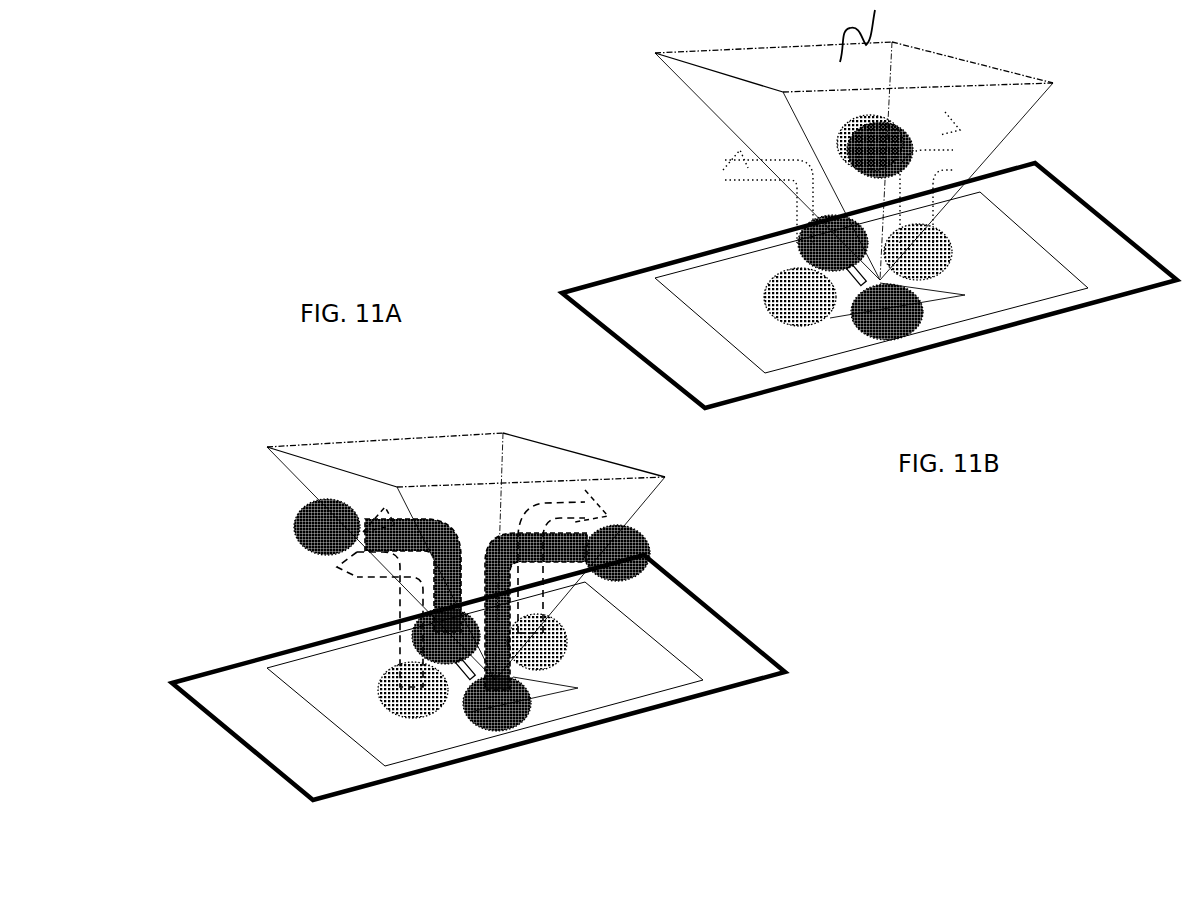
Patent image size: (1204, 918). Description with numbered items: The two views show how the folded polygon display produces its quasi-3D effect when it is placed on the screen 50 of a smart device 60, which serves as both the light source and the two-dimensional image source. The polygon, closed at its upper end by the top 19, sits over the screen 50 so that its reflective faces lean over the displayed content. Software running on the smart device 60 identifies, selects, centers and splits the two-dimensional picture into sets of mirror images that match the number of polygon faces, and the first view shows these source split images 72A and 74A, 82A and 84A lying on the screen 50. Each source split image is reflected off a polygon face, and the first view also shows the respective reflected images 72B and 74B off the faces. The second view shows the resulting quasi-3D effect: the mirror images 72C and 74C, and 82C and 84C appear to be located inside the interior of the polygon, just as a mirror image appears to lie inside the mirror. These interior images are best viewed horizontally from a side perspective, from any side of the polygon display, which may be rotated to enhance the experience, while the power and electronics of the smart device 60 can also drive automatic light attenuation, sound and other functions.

In FIG. 11A, the top 19 is at (455, 450).
In FIG. 11A, the screen 50 is at (485, 674).
In FIG. 11B, the screen 50 is at (871, 282).
In FIG. 11A, the smart device 60 is at (478, 677).
In FIG. 11B, the smart device 60 is at (869, 285).
In FIG. 11A, the source split image 72A is at (512, 725).
In FIG. 11B, the source split image 72A is at (898, 326).
In FIG. 11A, the reflected image 72B is at (653, 557).
In FIG. 11B, the mirror image 72C is at (910, 138).
In FIG. 11A, the source split image 74A is at (413, 641).
In FIG. 11A, the reflected image 74B is at (296, 527).
In FIG. 11B, the mirror image 74C is at (870, 143).
In FIG. 11A, the source split image 82A is at (390, 697).
In FIG. 11B, the mirror image 82C is at (847, 143).
In FIG. 11A, the source split image 84A is at (547, 634).
In FIG. 11B, the mirror image 84C is at (930, 177).